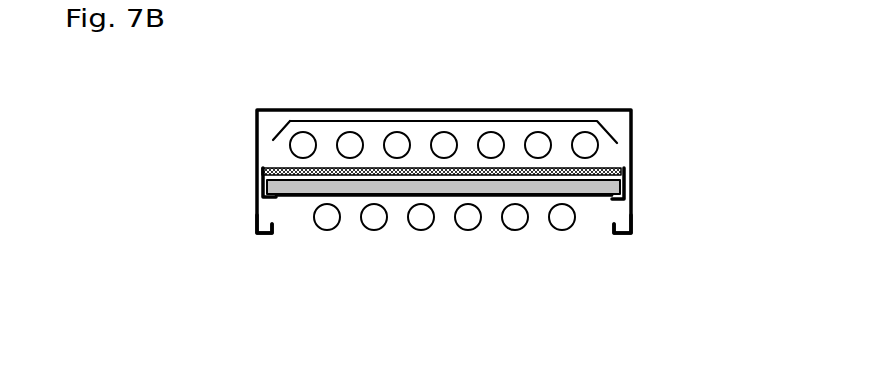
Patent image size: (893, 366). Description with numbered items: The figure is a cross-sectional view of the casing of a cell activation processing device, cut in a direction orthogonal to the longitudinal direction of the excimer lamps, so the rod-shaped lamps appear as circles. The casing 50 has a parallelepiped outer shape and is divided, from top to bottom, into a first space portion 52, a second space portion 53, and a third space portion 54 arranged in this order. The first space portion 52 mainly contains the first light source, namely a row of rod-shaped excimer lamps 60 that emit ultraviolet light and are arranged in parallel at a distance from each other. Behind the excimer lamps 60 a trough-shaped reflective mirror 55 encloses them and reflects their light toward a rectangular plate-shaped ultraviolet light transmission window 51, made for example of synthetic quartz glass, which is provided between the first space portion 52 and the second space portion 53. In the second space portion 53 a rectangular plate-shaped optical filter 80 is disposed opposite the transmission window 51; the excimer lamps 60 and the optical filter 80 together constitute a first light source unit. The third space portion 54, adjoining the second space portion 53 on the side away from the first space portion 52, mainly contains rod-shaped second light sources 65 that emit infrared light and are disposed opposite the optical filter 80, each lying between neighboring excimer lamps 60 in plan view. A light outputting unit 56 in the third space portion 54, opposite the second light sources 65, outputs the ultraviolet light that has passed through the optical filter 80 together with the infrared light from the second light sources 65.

The casing 50 is at (253, 137).
The first space portion 52 is at (618, 126).
The reflective mirror 55 is at (272, 142).
The excimer lamp 60 is at (587, 147).
The ultraviolet light transmission window 51 is at (625, 181).
The second space portion 53 is at (253, 187).
The optical filter 80 is at (603, 198).
The third space portion 54 is at (255, 220).
The light outputting unit 56 is at (606, 237).
The second light source 65 is at (564, 220).